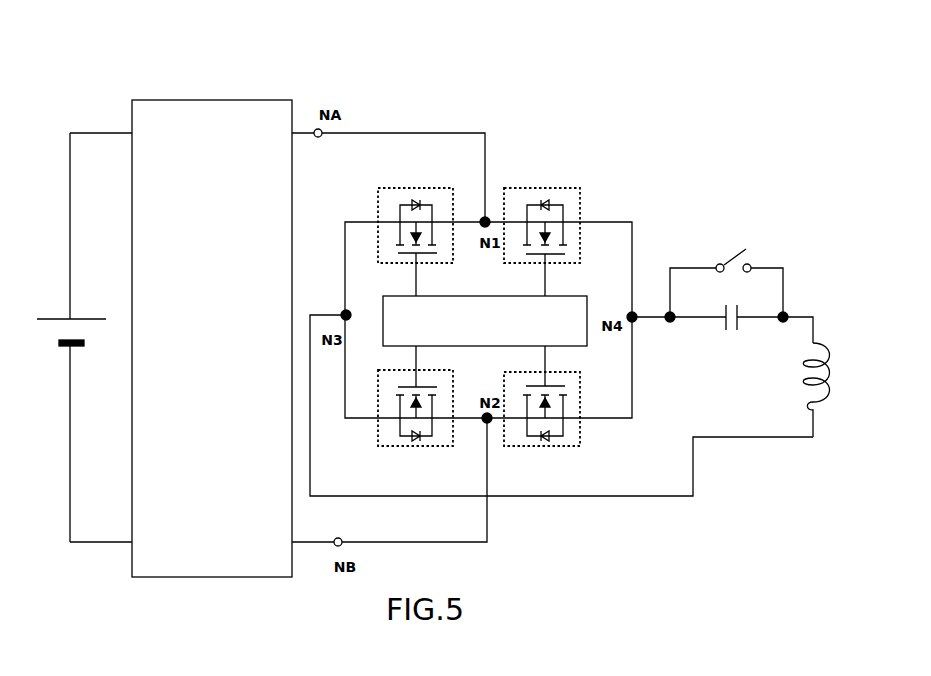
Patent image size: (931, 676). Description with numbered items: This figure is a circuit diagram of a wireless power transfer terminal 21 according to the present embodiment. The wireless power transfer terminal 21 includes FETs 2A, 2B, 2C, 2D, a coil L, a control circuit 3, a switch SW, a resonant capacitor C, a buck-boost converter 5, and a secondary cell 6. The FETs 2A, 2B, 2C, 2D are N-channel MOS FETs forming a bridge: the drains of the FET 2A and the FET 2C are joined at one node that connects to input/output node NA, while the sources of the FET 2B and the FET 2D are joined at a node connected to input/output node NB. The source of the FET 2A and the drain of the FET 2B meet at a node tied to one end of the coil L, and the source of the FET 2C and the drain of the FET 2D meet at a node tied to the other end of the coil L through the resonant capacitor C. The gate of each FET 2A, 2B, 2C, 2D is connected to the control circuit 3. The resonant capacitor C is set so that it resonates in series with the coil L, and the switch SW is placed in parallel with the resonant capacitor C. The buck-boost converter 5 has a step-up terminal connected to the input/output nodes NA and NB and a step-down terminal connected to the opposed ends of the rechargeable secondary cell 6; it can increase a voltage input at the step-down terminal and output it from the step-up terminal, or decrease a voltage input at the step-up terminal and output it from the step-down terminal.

The wireless power transfer terminal 21 is at (670, 123).
The buck-boost converter 5 is at (289, 108).
The secondary cell 6 is at (80, 317).
The FET 2A is at (380, 190).
The FET 2B is at (380, 445).
The FET 2C is at (580, 190).
The FET 2D is at (579, 446).
The control circuit 3 is at (586, 298).
The switch SW is at (726, 270).
The resonant capacitor C is at (731, 329).
The coil L is at (805, 390).